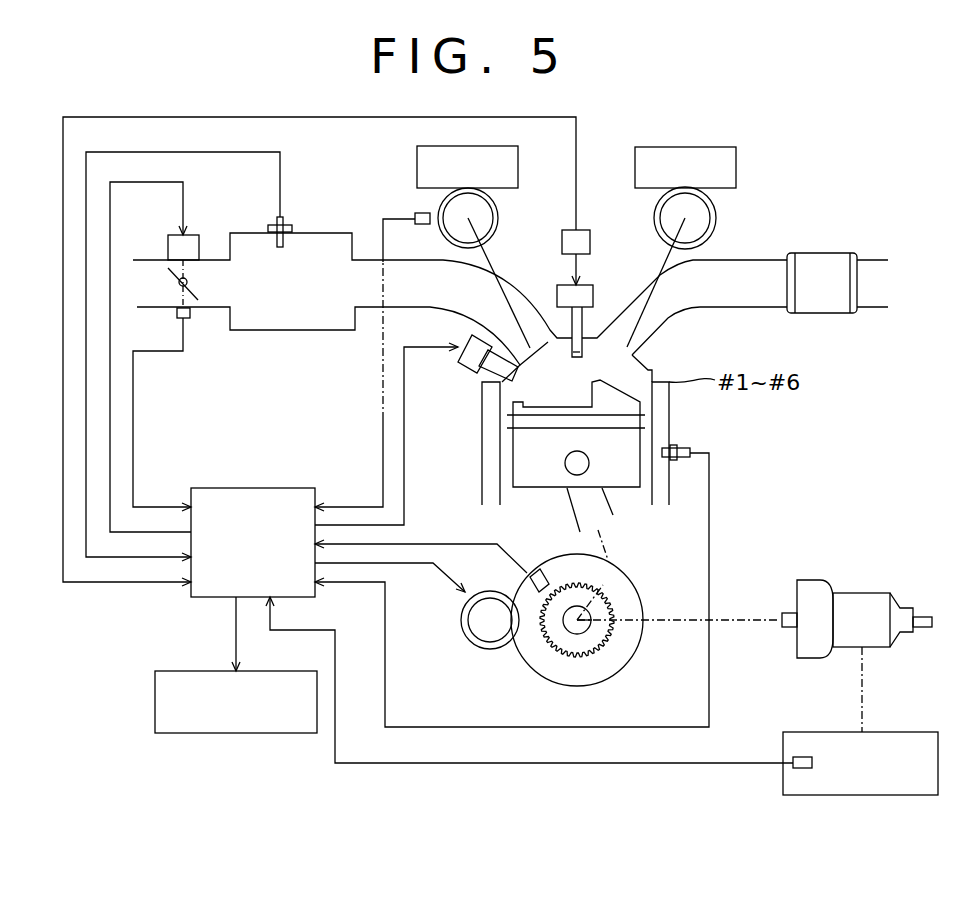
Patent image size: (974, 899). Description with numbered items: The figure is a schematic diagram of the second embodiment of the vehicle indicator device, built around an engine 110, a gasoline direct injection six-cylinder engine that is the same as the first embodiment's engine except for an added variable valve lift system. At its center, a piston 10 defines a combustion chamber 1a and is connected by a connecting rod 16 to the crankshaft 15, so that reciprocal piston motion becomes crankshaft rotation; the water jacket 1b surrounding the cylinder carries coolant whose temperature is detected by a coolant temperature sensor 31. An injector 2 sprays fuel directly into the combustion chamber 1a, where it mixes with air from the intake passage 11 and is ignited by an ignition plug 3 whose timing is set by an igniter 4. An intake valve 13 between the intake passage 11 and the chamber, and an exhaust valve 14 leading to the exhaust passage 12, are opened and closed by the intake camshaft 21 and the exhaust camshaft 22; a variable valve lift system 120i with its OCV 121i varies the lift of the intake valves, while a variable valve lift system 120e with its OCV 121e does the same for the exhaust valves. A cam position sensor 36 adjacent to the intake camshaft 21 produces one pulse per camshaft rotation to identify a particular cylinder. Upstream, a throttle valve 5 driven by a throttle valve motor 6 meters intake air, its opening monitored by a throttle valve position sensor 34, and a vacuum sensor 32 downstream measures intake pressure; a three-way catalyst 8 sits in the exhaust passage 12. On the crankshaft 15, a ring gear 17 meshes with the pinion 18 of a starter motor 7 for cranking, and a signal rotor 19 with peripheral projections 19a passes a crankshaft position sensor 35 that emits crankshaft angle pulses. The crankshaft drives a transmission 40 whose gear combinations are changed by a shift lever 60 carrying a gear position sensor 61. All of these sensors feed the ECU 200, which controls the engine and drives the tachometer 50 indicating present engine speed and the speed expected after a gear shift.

The combustion chamber 1a is at (540, 390).
The water jacket 1b is at (660, 415).
The injector 2 is at (458, 366).
The ignition plug 3 is at (585, 283).
The igniter 4 is at (577, 228).
The throttle valve 5 is at (200, 300).
The throttle valve motor 6 is at (197, 233).
The starter motor 7 is at (460, 622).
The three-way catalyst 8 is at (815, 253).
The piston 10 is at (527, 457).
The intake passage 11 is at (466, 310).
The exhaust passage 12 is at (672, 320).
The intake valve 13 is at (537, 330).
The exhaust valve 14 is at (617, 327).
The crankshaft 15 is at (594, 633).
The connecting rod 16 is at (597, 502).
The ring gear 17 is at (530, 673).
The pinion 18 is at (492, 637).
The signal rotor 19 is at (607, 628).
The projections 19a is at (566, 584).
The intake camshaft 21 is at (478, 210).
The exhaust camshaft 22 is at (700, 222).
The coolant temperature sensor 31 is at (677, 447).
The vacuum sensor 32 is at (280, 217).
The throttle valve position sensor 34 is at (190, 318).
The crankshaft position sensor 35 is at (529, 575).
The cam position sensor 36 is at (415, 218).
The transmission 40 is at (863, 590).
The tachometer 50 is at (220, 735).
The shift lever 60 is at (897, 796).
The gear position sensor 61 is at (800, 770).
The engine 110 is at (473, 483).
The variable valve lift system 120i is at (436, 205).
The variable valve lift system 120e is at (716, 201).
The OCV 121i is at (440, 146).
The OCV 121e is at (710, 147).
The ECU 200 is at (252, 488).